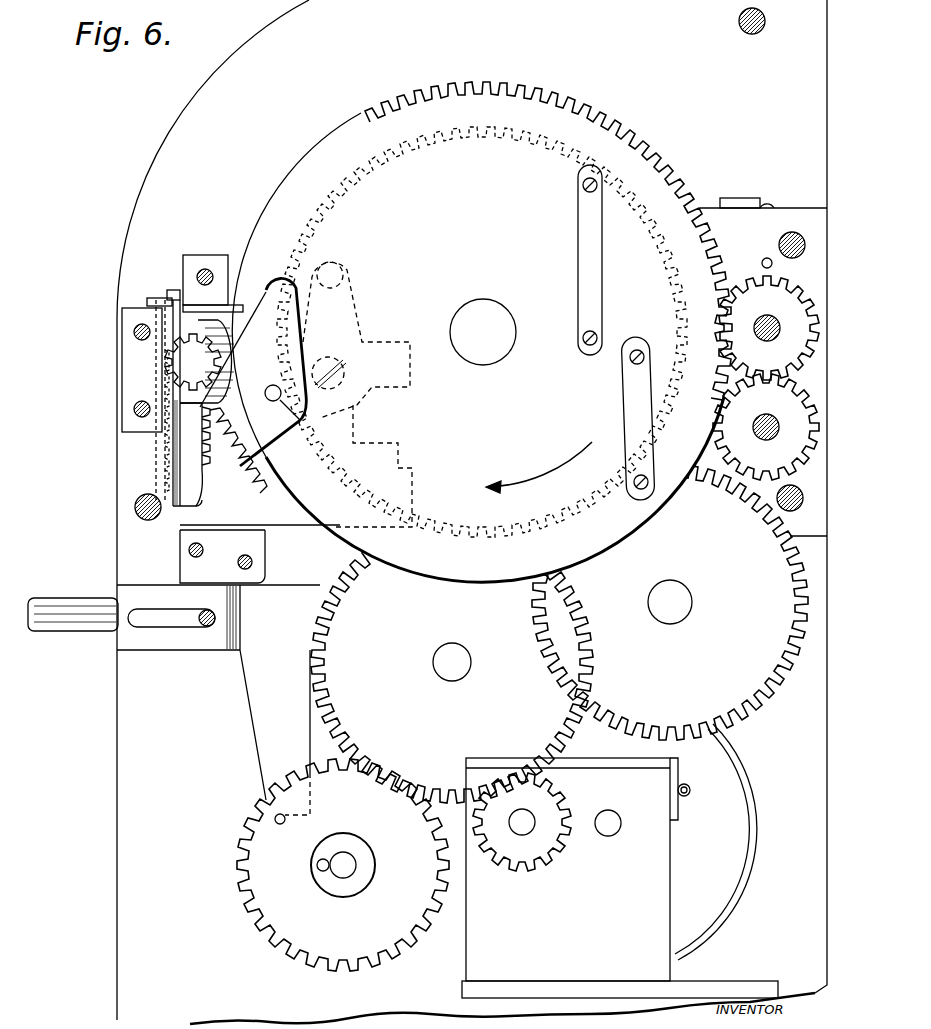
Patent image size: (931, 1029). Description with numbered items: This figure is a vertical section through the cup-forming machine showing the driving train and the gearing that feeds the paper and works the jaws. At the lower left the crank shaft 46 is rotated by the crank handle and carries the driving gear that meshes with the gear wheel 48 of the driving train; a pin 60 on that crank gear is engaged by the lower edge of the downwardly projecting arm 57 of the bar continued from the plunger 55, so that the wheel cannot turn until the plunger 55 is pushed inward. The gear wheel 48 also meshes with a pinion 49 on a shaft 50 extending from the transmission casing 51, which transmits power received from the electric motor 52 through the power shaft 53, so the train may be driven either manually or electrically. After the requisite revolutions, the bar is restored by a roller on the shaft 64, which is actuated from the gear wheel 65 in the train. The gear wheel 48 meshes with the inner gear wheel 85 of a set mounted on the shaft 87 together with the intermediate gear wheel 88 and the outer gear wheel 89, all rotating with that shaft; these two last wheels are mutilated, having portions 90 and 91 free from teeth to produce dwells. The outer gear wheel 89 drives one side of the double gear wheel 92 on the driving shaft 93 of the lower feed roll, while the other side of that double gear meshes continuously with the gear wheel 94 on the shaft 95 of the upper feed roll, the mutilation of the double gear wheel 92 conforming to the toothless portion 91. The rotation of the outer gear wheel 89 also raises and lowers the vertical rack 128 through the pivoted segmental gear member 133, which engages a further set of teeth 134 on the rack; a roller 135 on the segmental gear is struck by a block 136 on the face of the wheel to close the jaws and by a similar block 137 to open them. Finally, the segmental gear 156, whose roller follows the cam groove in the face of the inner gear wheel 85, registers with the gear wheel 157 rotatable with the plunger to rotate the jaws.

The shaft 46 is at (320, 867).
The gear wheel 48 is at (542, 720).
The pinion 49 is at (540, 838).
The shaft 50 is at (526, 820).
The transmission casing 51 is at (620, 878).
The electric motor 52 is at (720, 878).
The power shaft 53 is at (612, 818).
The plunger 55 is at (80, 632).
The downwardly projecting arm 57 is at (275, 725).
The pin 60 is at (279, 824).
The shaft 64 is at (680, 595).
The gear wheel 65 is at (670, 602).
The inner gear wheel 85 is at (372, 158).
The shaft 87 is at (486, 358).
The intermediate gear wheel 88 is at (523, 143).
The outer gear wheel 89 is at (637, 160).
The portion free from gear teeth 90 is at (580, 150).
The portion free from gear teeth 91 is at (362, 125).
The double gear wheel 92 is at (790, 463).
The driving shaft 93 is at (764, 424).
The gear wheel 94 is at (783, 298).
The shaft 95 is at (774, 336).
The rack 128 is at (158, 433).
The segmental gear member 133 is at (286, 433).
The teeth 134 is at (206, 460).
The roller 135 is at (279, 272).
The block 136 is at (630, 398).
The block 137 is at (582, 246).
The segmental gear 156 is at (270, 486).
The gear wheel 157 is at (206, 372).